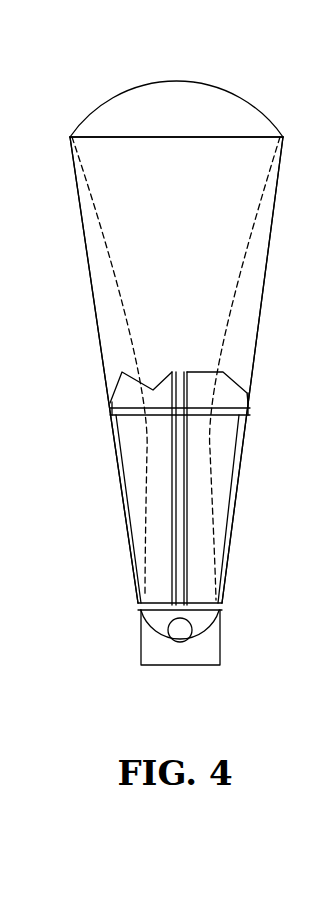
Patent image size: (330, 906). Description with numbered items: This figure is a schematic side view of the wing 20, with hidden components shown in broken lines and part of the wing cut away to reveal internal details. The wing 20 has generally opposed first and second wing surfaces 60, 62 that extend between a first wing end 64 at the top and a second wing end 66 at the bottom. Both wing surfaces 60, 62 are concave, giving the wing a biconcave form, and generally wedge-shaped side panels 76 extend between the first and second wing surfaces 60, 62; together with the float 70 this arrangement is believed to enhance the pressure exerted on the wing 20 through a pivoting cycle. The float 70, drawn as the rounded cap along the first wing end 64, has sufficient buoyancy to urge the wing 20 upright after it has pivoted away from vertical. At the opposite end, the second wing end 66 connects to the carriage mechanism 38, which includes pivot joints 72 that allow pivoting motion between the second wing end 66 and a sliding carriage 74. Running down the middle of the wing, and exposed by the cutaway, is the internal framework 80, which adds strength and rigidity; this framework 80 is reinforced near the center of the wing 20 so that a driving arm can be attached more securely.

The wing 20 is at (235, 44).
The carriage mechanism 38 is at (134, 686).
The first wing surface 60 is at (135, 330).
The second wing surface 62 is at (222, 318).
The first wing end 64 is at (100, 137).
The second wing end 66 is at (203, 607).
The float 70 is at (227, 118).
The pivot joints 72 is at (192, 648).
The sliding carriage 74 is at (150, 657).
The side panels 76 is at (156, 216).
The internal framework 80 is at (182, 512).